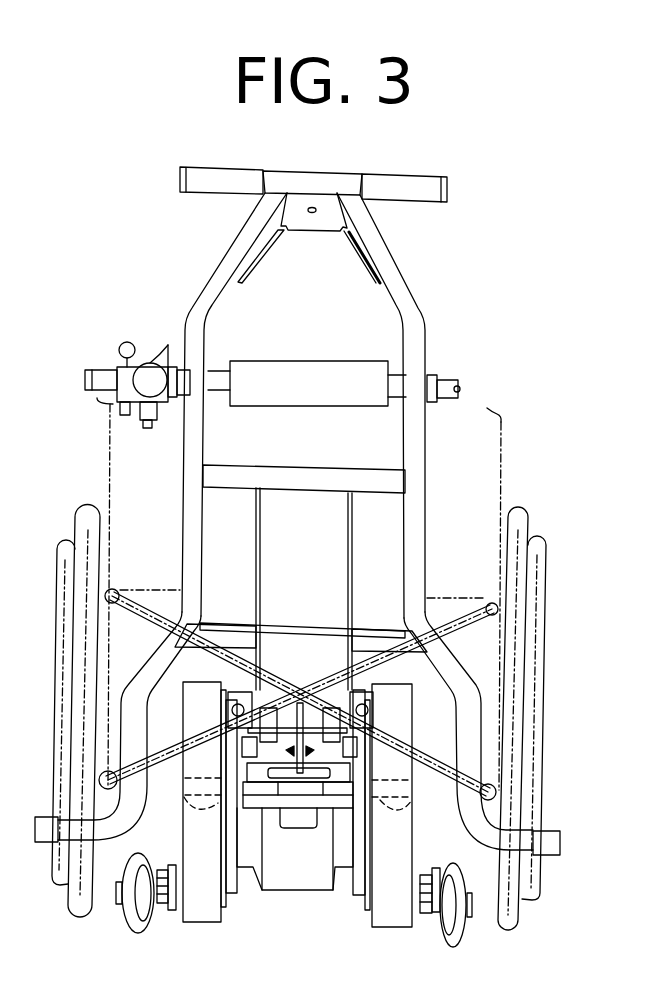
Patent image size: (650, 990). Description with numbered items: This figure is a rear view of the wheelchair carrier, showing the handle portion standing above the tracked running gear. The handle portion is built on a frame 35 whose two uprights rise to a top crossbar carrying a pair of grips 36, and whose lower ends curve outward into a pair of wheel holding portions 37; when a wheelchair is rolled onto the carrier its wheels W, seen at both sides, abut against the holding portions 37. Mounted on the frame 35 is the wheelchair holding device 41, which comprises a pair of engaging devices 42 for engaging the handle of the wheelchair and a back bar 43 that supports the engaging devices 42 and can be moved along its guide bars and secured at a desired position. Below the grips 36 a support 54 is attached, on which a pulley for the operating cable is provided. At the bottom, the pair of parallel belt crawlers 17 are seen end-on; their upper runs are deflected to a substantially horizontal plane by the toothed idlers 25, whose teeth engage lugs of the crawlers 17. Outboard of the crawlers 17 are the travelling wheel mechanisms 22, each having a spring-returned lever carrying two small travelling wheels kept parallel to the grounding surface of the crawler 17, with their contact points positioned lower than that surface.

The belt crawler 17 is at (200, 913).
The travelling wheel mechanism 22 is at (137, 924).
The idler 25 is at (182, 808).
The frame 35 is at (186, 513).
The grip 36 is at (423, 200).
The wheel holding portion 37 is at (83, 826).
The wheelchair holding device 41 is at (192, 268).
The engaging device 42 is at (152, 362).
The back bar 43 is at (253, 370).
The support 54 is at (323, 222).
The wheels W is at (75, 522).